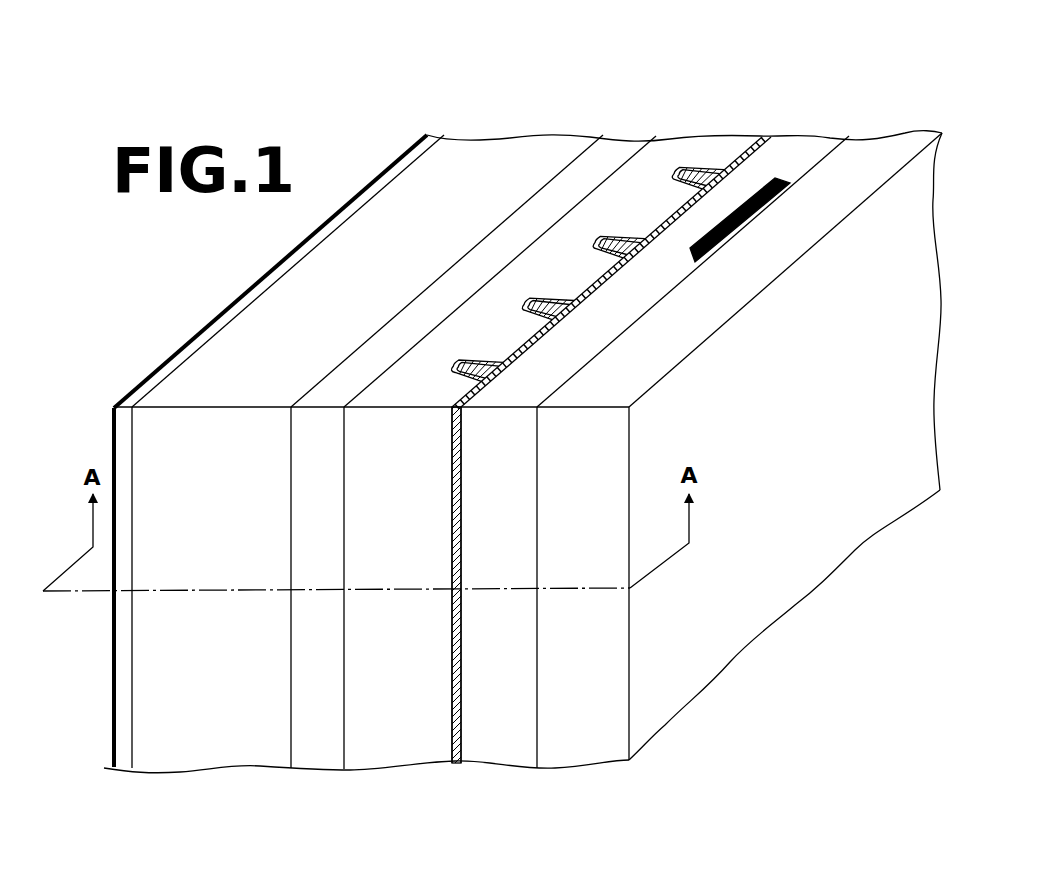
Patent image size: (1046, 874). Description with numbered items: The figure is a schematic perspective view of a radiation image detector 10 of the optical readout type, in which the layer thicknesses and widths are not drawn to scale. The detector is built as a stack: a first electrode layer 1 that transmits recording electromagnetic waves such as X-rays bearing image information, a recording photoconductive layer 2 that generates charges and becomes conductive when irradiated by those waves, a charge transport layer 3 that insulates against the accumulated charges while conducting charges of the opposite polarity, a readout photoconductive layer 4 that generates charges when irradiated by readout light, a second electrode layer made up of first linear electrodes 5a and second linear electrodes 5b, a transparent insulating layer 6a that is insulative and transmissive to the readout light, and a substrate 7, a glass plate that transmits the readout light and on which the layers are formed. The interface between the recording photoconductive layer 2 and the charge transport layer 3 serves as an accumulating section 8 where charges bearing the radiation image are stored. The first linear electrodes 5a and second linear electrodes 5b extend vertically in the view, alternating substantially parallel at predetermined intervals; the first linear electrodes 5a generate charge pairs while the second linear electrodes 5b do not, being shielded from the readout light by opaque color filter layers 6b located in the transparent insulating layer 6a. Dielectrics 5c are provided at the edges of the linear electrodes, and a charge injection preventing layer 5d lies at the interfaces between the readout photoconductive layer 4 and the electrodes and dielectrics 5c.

The first electrode layer 1 is at (125, 757).
The recording photoconductive layer 2 is at (206, 758).
The charge transport layer 3 is at (316, 756).
The readout photoconductive layer 4 is at (392, 755).
The first linear electrodes 5a is at (515, 362).
The second linear electrodes 5b is at (660, 223).
The dielectrics 5c is at (460, 362).
The charge injection preventing layer 5d is at (760, 135).
The transparent insulating layer 6a is at (497, 755).
The color filter layers 6b is at (747, 223).
The substrate 7 is at (575, 755).
The accumulating section 8 is at (283, 743).
The radiation image detector 10 is at (660, 85).